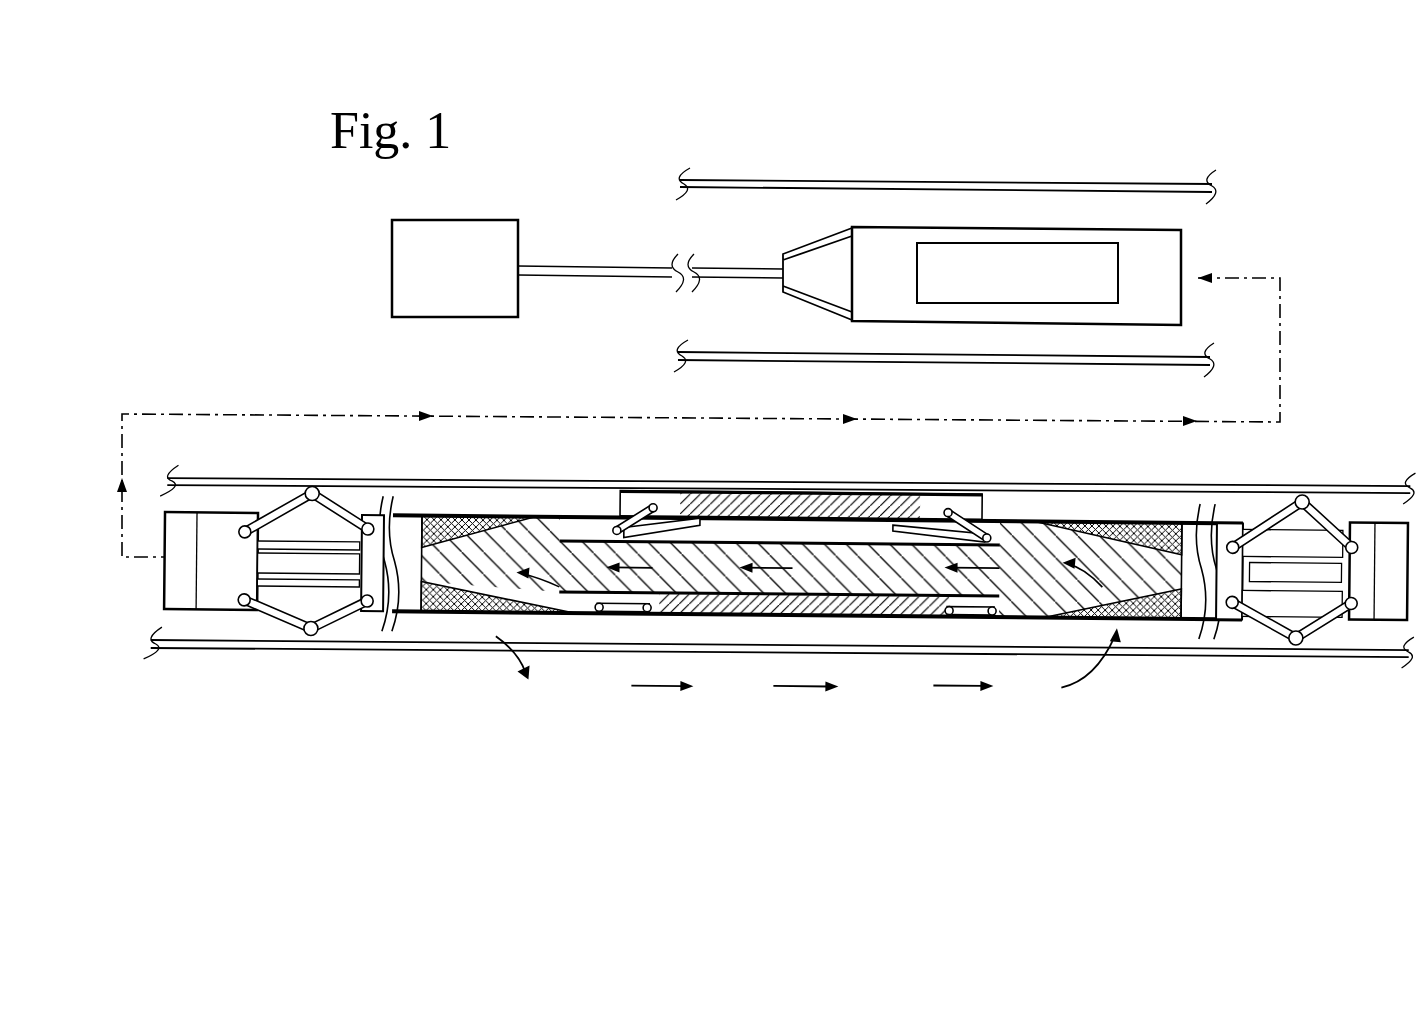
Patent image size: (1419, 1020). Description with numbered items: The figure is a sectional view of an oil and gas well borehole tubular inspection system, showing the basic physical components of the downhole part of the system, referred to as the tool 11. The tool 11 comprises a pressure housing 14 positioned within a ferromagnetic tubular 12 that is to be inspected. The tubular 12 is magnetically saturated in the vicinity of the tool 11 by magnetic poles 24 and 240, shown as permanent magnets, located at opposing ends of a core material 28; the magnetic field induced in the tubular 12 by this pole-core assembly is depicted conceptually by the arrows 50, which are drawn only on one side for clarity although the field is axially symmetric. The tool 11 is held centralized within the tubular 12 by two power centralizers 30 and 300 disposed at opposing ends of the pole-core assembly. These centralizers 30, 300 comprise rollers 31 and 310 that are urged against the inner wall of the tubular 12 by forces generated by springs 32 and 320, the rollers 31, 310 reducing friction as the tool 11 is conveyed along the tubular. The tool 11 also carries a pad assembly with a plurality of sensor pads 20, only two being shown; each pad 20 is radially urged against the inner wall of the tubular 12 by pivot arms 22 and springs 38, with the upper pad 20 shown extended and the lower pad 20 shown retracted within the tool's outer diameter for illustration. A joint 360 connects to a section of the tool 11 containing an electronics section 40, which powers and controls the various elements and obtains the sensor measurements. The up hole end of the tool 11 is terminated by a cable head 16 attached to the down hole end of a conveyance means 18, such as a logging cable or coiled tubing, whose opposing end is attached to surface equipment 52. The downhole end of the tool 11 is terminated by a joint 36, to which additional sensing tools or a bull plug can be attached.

The tool 11 is at (900, 208).
The ferromagnetic tubular 12 is at (975, 183).
The pressure housing 14 is at (1020, 228).
The cable head 16 is at (830, 238).
The conveyance means 18 is at (600, 267).
The sensor pad 20 is at (853, 487).
The pad linkage 22 is at (617, 514).
The magnetic pole 24 is at (457, 511).
The core material 28 is at (474, 567).
The power centralizer 30 is at (330, 499).
The roller 31 is at (291, 481).
The spring 32 is at (350, 557).
The joint 36 is at (1385, 609).
The spring 38 is at (802, 567).
The electronics section 40 is at (1076, 258).
The arrows 50 is at (787, 560).
The surface equipment 52 is at (503, 243).
The magnetic pole 240 is at (1128, 519).
The power centralizer 300 is at (1333, 510).
The roller 310 is at (1271, 485).
The spring 320 is at (1279, 571).
The joint 360 is at (178, 518).